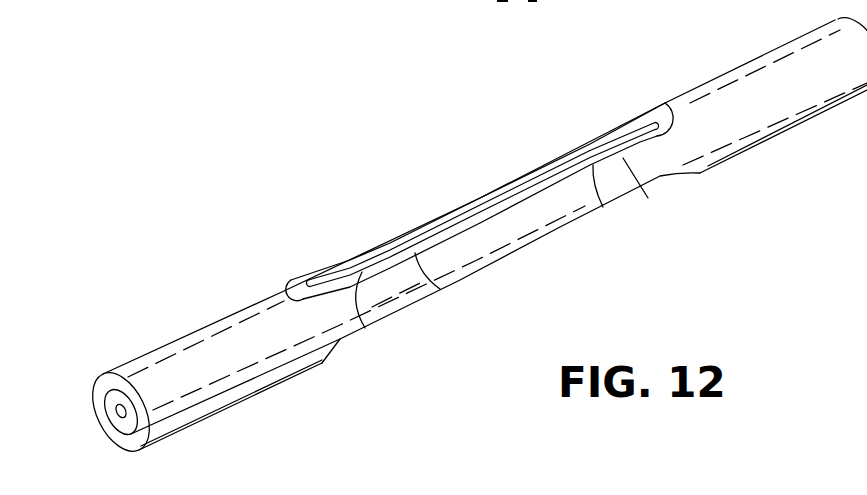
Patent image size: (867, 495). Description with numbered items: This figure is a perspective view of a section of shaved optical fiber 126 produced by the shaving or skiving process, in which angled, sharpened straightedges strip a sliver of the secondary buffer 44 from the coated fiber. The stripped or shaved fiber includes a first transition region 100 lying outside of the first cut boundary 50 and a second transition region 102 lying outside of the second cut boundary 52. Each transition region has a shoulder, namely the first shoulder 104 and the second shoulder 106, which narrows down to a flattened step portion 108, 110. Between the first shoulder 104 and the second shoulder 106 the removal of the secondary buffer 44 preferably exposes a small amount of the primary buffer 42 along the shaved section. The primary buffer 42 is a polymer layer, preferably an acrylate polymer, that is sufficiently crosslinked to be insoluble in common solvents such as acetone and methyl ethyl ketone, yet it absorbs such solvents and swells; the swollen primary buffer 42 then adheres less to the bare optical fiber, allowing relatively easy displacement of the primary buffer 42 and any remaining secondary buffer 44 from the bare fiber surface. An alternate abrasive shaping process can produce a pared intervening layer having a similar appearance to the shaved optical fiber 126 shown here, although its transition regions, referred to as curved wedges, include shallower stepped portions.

The primary buffer 42 is at (506, 192).
The secondary buffer 44 is at (484, 203).
The first cut boundary 50 is at (603, 207).
The second cut boundary 52 is at (440, 289).
The first transition region 100 is at (721, 181).
The second transition region 102 is at (275, 250).
The first shoulder 104 is at (664, 102).
The second shoulder 106 is at (298, 282).
The flattened step portion 108 is at (648, 198).
The flattened step portion 110 is at (365, 328).
The shaved optical fiber 126 is at (556, 268).